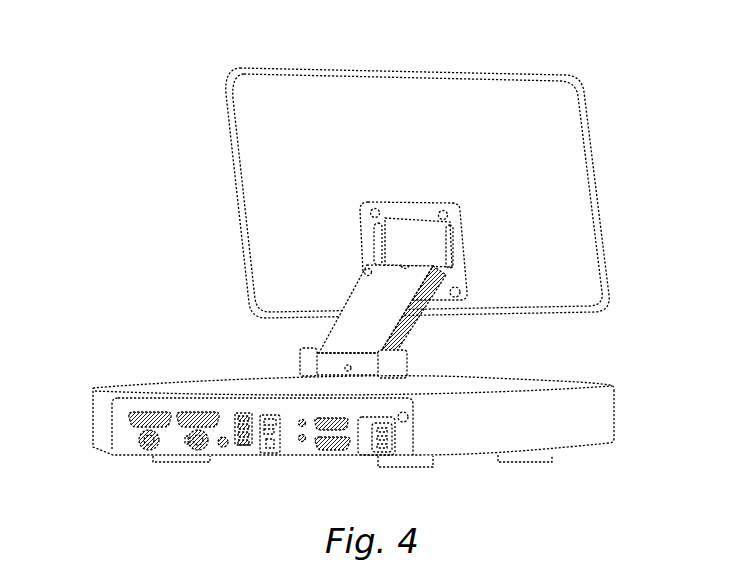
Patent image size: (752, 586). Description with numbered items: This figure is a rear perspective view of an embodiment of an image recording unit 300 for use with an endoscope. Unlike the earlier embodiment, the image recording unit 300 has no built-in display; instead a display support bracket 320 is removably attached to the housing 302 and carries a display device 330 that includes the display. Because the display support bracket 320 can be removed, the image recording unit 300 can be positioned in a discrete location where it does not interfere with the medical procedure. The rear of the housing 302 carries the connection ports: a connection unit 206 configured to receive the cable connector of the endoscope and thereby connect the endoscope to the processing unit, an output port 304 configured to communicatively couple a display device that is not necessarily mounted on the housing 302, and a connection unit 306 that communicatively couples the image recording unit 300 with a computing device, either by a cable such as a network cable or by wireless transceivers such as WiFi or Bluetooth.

The image recording unit 300 is at (372, 408).
The housing 302 is at (175, 385).
The output port 304 is at (142, 418).
The connection unit 306 is at (192, 442).
The connection unit 206 is at (138, 440).
The display support bracket 320 is at (286, 357).
The display device 330 is at (590, 86).